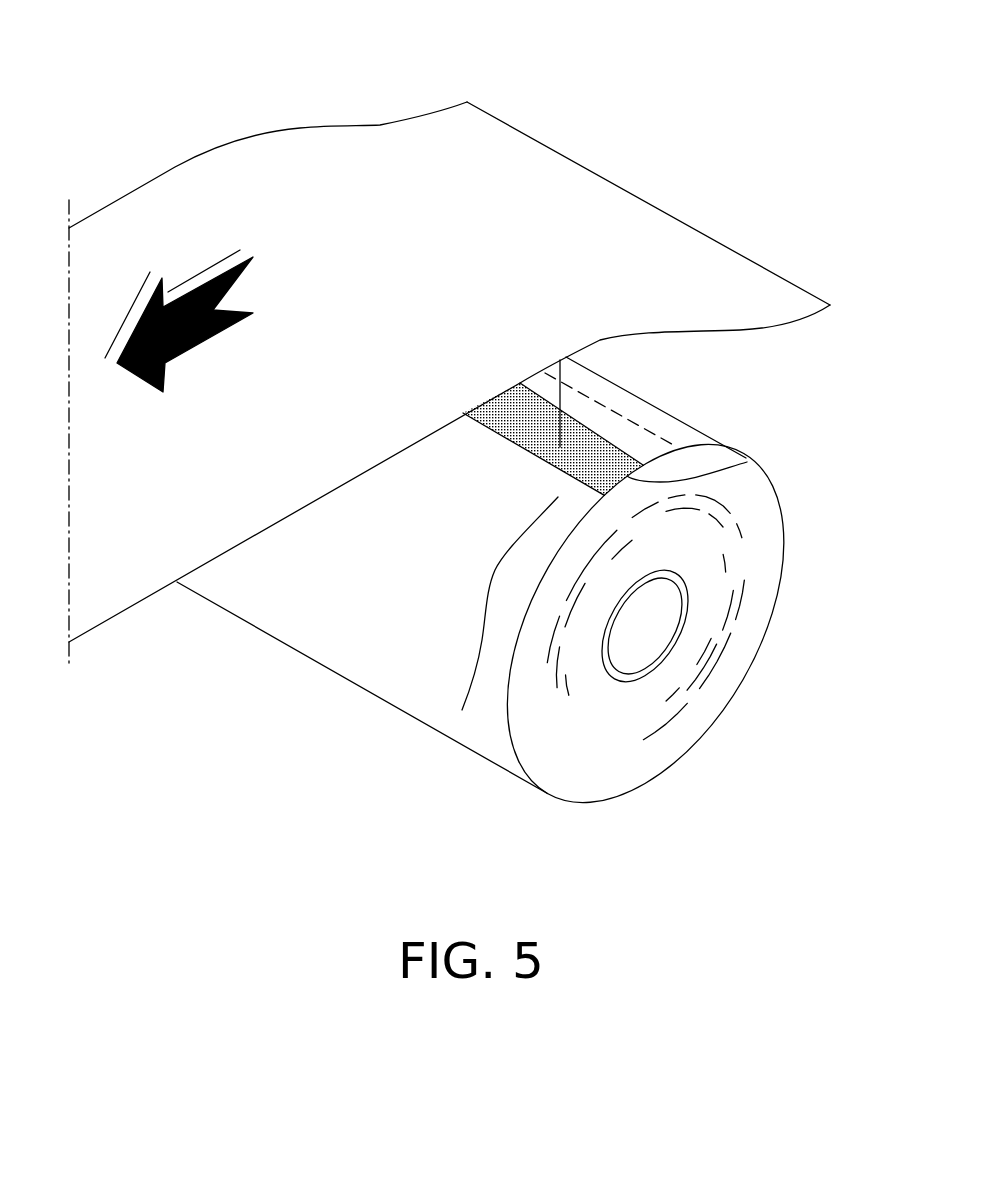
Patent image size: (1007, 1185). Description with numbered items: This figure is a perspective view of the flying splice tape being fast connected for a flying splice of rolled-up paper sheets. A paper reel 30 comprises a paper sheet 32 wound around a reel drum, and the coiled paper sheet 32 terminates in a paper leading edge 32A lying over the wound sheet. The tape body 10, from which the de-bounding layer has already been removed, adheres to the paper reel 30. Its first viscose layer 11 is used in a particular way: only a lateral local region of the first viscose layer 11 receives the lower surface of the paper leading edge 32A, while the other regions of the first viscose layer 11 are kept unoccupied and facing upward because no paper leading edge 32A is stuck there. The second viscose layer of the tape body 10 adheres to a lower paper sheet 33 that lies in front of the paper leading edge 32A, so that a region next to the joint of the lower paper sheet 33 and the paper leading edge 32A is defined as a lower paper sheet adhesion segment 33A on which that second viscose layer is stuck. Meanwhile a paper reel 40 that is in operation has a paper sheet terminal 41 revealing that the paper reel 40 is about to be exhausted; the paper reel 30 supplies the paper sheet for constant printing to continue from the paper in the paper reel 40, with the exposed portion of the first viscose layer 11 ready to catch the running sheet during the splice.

The tape body 10 is at (535, 456).
The first viscose layer 11 is at (587, 437).
The paper reel 30 is at (712, 743).
The paper sheet 32 is at (653, 420).
The paper leading edge 32A is at (667, 450).
The lower paper sheet 33 is at (462, 710).
The lower paper sheet adhesion segment 33A is at (747, 462).
The paper reel 40 is at (293, 122).
The paper sheet terminal 41 is at (520, 170).